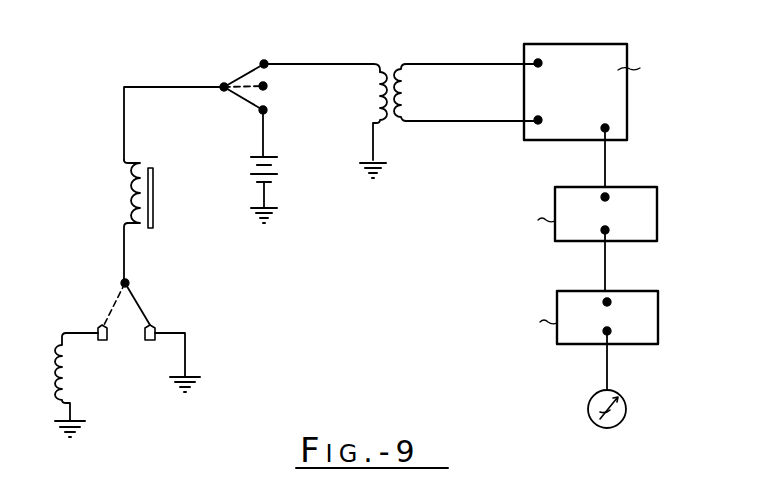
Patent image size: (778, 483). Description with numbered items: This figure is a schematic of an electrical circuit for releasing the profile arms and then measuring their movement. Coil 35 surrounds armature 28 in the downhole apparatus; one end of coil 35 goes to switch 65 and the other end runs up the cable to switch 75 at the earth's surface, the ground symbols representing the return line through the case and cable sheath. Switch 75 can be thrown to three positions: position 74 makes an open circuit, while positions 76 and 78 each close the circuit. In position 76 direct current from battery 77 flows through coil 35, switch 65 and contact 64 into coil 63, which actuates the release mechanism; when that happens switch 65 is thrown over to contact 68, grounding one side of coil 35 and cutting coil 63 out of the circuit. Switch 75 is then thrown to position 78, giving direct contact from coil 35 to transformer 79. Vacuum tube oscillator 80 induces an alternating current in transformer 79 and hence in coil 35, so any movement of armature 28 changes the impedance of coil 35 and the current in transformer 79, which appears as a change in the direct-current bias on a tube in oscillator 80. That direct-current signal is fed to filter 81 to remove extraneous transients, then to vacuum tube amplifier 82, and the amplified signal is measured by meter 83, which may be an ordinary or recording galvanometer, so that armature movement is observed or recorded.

The armature 28 is at (154, 205).
The coil 35 is at (127, 201).
The coil 63 is at (62, 372).
The contact 64 is at (103, 325).
The switch 65 is at (129, 283).
The contact 68 is at (158, 322).
The position 74 is at (272, 86).
The switch 75 is at (251, 72).
The position 76 is at (272, 112).
The battery 77 is at (282, 173).
The position 78 is at (276, 62).
The transformer 79 is at (397, 62).
The vacuum tube oscillator 80 is at (534, 143).
The filter 81 is at (650, 213).
The vacuum tube amplifier 82 is at (652, 318).
The meter 83 is at (626, 410).